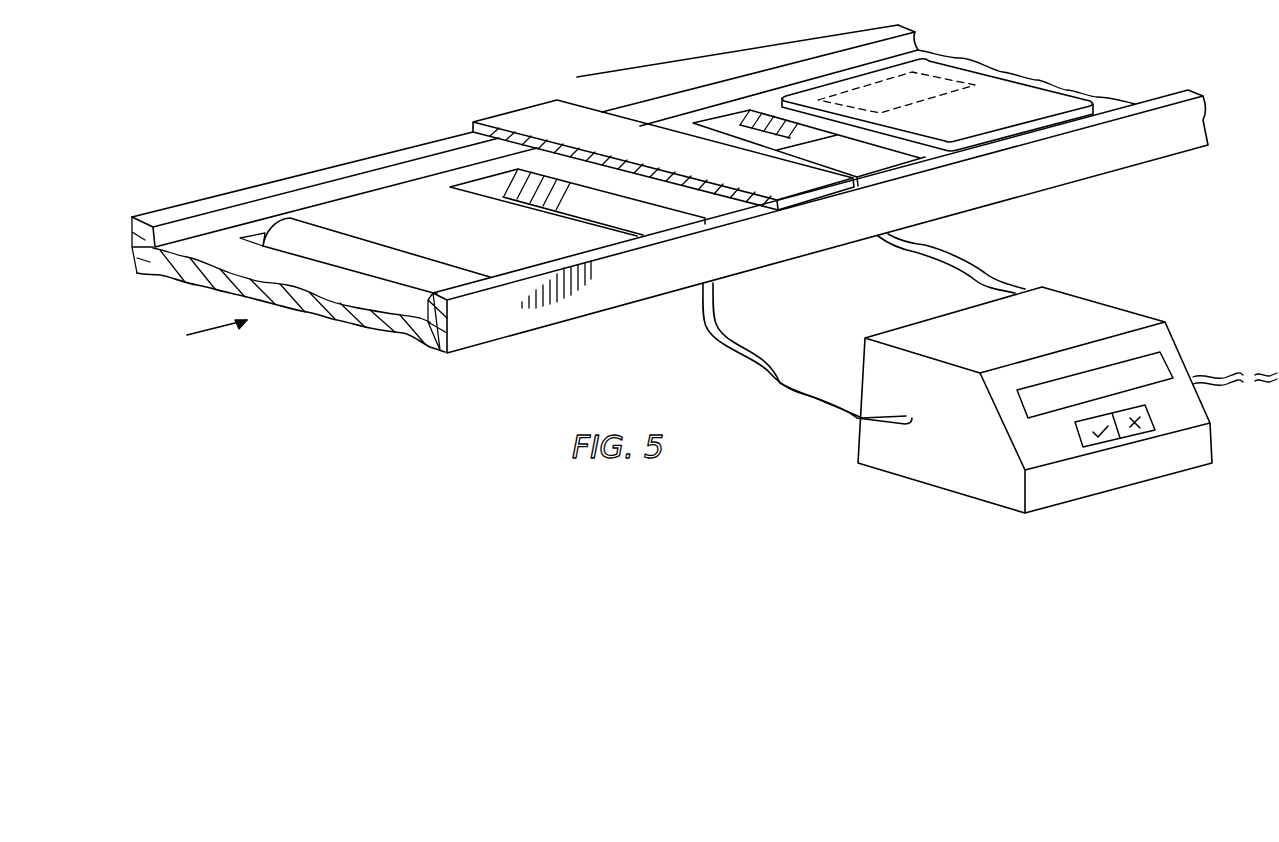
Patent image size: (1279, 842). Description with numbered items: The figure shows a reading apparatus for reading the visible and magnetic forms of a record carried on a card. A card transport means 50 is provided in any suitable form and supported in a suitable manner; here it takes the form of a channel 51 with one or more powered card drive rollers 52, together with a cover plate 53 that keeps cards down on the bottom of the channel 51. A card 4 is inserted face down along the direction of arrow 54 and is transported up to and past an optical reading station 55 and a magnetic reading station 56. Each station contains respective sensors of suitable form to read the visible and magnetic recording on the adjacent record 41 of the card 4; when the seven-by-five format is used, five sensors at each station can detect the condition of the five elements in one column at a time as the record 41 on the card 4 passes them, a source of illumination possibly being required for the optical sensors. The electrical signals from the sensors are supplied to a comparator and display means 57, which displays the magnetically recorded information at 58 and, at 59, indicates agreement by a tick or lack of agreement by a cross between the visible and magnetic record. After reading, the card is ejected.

The card 4 is at (1053, 107).
The record 41 is at (927, 88).
The card transport means 50 is at (372, 340).
The channel 51 is at (413, 195).
The powered card drive roller 52 is at (457, 268).
The cover plate 53 is at (540, 108).
The arrow 54 is at (217, 341).
The optical reading station 55 is at (652, 213).
The magnetic reading station 56 is at (850, 150).
The comparator and display means 57 is at (1105, 306).
The display of magnetically recorded information 58 is at (1160, 367).
The agreement indicator 59 is at (1147, 410).